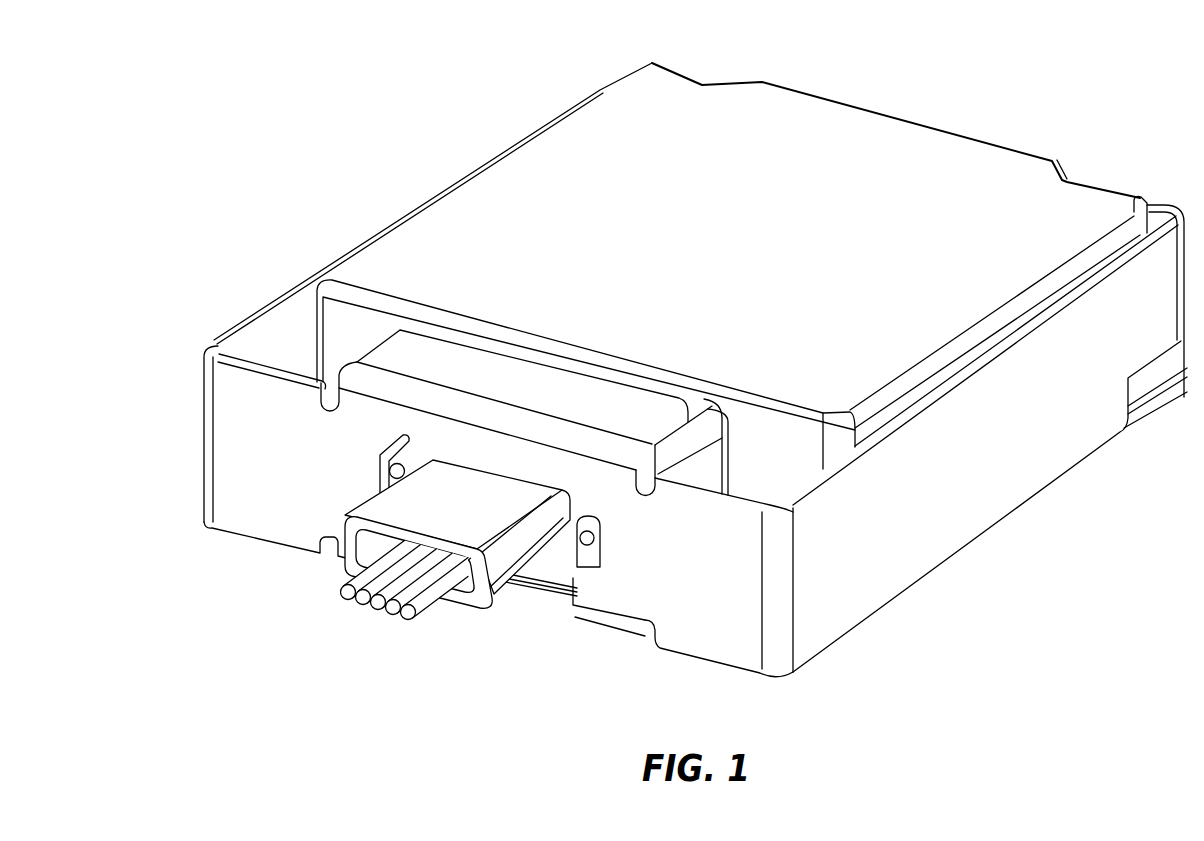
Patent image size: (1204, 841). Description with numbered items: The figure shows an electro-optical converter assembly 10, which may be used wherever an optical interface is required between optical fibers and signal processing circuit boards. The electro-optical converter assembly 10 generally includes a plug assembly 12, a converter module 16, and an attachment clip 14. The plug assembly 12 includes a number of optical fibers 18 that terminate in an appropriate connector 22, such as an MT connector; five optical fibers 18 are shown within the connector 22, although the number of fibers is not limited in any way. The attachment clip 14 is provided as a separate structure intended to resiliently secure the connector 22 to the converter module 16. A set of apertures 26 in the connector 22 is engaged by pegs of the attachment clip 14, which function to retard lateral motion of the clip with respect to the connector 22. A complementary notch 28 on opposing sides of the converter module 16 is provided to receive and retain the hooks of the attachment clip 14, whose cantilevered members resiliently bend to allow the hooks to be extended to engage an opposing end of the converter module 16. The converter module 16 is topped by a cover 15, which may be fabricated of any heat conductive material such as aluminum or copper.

The electro-optical converter assembly 10 is at (635, 363).
The plug assembly 12 is at (629, 441).
The attachment clip 14 is at (178, 462).
The cover 15 is at (828, 98).
The converter module 16 is at (707, 269).
The optical fibers 18 is at (358, 622).
The connector 22 is at (547, 588).
The apertures 26 is at (403, 435).
The notch 28 is at (1108, 178).